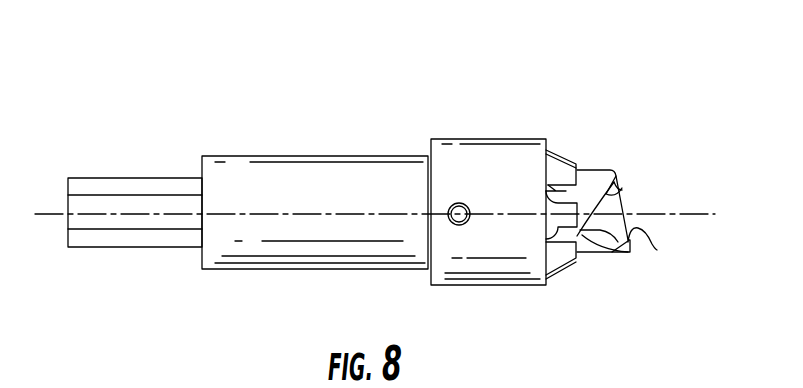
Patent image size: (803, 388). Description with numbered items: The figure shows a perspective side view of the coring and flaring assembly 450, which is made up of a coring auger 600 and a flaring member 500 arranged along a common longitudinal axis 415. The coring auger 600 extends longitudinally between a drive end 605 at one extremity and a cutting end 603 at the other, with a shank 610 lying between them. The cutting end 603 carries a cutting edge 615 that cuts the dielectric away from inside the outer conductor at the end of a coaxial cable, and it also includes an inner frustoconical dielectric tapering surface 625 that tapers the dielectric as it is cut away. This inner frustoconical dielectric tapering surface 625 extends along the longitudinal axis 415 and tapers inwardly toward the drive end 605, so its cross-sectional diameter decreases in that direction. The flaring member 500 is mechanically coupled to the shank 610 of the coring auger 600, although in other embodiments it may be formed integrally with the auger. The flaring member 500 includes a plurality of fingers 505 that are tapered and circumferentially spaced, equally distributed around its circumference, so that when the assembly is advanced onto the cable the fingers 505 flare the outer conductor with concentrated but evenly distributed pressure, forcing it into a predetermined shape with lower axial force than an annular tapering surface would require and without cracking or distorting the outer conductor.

The coring and flaring assembly 450 is at (412, 92).
The longitudinal axis 415 is at (690, 212).
The drive end 605 is at (170, 187).
The coring auger 600 is at (301, 173).
The shank 610 is at (308, 228).
The flaring member 500 is at (461, 153).
The plurality of fingers 505 is at (560, 263).
The cutting end 603 is at (592, 182).
The inner frustoconical dielectric tapering surface 625 is at (622, 190).
The cutting edge 615 is at (657, 250).